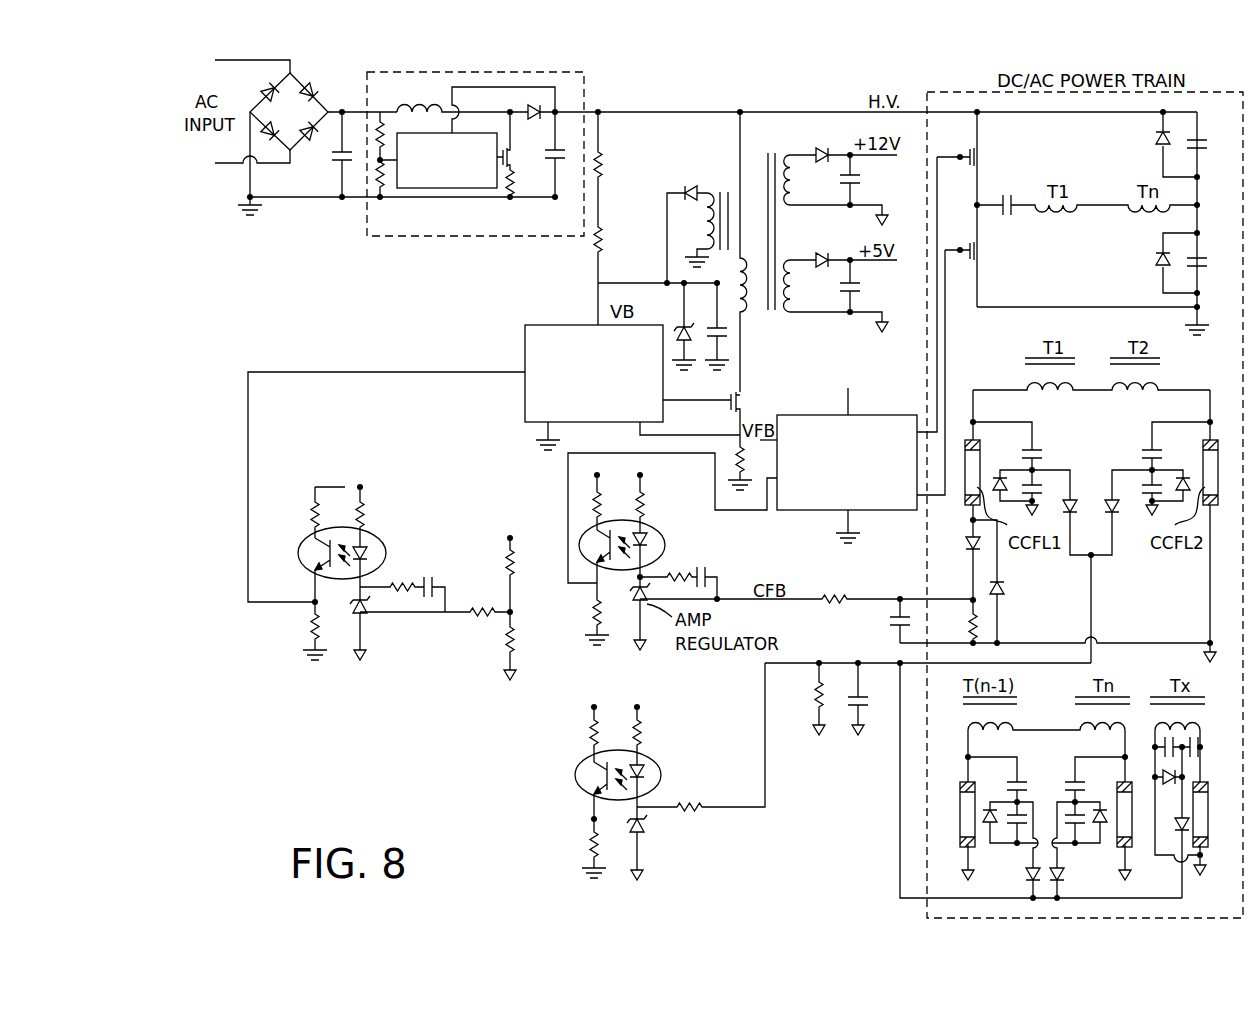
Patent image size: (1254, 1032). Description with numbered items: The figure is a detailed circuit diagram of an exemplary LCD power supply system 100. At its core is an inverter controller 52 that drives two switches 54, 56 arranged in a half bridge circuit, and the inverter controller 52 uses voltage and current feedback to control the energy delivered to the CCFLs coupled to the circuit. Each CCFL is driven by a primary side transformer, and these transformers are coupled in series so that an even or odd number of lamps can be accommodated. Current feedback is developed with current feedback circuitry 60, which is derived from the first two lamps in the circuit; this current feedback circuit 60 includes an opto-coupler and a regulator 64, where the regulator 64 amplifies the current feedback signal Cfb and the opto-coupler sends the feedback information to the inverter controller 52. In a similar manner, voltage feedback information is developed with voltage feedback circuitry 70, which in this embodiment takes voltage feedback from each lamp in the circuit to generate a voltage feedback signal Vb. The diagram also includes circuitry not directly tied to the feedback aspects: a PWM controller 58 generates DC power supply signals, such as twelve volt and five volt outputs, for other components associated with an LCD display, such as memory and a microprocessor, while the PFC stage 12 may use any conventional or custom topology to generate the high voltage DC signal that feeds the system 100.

The PFC stage 12 is at (584, 105).
The inverter controller 52 is at (825, 414).
The switch 54 is at (979, 161).
The switch 56 is at (979, 248).
The PWM controller 58 is at (578, 324).
The current feedback circuitry 60 is at (680, 563).
The regulator 64 is at (634, 598).
The voltage feedback circuitry 70 is at (663, 766).
The LCD power supply system 100 is at (320, 340).